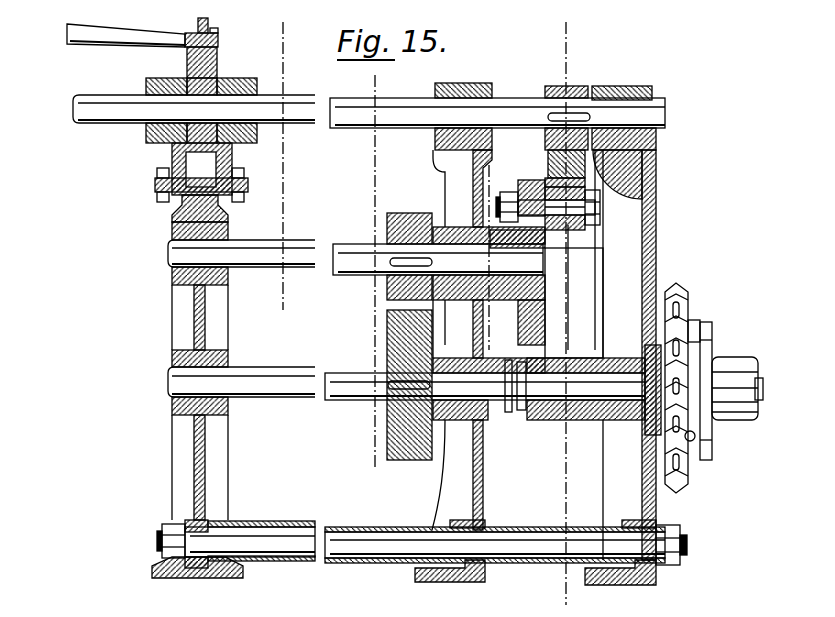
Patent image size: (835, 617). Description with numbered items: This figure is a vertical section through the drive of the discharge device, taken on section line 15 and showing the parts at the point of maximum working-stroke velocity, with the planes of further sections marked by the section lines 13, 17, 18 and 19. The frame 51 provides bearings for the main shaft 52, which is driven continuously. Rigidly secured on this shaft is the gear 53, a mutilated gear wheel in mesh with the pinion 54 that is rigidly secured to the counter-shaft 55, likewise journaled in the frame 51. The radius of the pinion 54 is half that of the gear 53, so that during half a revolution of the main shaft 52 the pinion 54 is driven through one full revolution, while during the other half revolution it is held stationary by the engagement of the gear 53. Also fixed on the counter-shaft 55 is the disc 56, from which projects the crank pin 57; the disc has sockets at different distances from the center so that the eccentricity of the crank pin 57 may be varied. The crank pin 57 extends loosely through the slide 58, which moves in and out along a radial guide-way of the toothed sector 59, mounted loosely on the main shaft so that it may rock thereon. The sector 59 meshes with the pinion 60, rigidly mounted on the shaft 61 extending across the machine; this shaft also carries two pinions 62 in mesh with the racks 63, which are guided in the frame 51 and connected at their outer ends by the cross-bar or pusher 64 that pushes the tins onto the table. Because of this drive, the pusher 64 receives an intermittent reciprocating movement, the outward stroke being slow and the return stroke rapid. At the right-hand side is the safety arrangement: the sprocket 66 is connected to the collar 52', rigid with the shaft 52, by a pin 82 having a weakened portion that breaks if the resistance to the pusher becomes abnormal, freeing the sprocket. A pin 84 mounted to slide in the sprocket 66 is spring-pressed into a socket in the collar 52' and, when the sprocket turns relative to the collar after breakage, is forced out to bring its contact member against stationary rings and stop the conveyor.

The section line 13- 13 is at (278, 292).
The section line 15- 15 is at (432, 598).
The section line 17- 17 is at (575, 588).
The section line 18- 18 is at (367, 452).
The section line 19- 19 is at (481, 325).
The frame 51 is at (198, 318).
The main shaft 52 is at (478, 380).
The collar 52' is at (717, 389).
The gear 53 is at (400, 456).
The pinion 54 is at (405, 214).
The counter-shaft 55 is at (257, 268).
The disc 56 is at (563, 305).
The crank pin 57 is at (601, 212).
The slide 58 is at (575, 237).
The toothed sector 59 is at (553, 162).
The pinion 60 is at (578, 95).
The shaft 61 is at (108, 123).
The pinions 62 is at (218, 66).
The racks 63 is at (219, 37).
The pusher 64 is at (128, 30).
The sprocket 66 is at (690, 305).
The pin 82 is at (696, 438).
The pin 84 is at (700, 322).